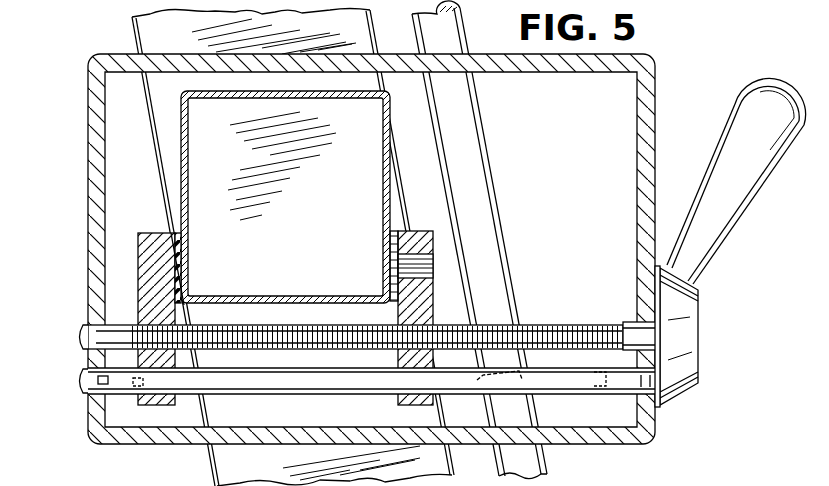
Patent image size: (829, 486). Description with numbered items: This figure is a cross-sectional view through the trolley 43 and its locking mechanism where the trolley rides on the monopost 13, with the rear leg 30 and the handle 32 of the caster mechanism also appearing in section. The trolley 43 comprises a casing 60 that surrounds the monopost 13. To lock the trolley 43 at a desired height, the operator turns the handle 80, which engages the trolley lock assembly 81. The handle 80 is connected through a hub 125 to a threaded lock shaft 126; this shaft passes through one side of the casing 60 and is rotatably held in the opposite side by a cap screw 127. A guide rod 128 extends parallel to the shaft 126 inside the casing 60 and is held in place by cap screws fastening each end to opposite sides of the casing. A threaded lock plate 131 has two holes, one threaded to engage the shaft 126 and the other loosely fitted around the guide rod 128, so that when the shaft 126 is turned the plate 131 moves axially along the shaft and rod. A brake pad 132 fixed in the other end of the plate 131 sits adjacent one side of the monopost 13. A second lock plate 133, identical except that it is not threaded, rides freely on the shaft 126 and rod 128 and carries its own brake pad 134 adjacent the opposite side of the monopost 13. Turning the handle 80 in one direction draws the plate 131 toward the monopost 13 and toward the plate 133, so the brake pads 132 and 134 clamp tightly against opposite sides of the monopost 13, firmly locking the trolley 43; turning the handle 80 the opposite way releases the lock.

The monopost 13 is at (288, 273).
The rear leg 30 is at (220, 453).
The handle 32 is at (483, 237).
The trolley 43 is at (82, 244).
The casing 60 is at (90, 127).
The handle 80 is at (705, 236).
The trolley lock assembly 81 is at (690, 396).
The hub 125 is at (688, 342).
The threaded lock shaft 126 is at (594, 324).
The cap screw 127 is at (80, 341).
The guide rod 128 is at (347, 380).
The threaded lock plate 131 is at (150, 297).
The brake pad 132 is at (185, 268).
The second lock plate 133 is at (405, 300).
The brake pad 134 is at (393, 248).